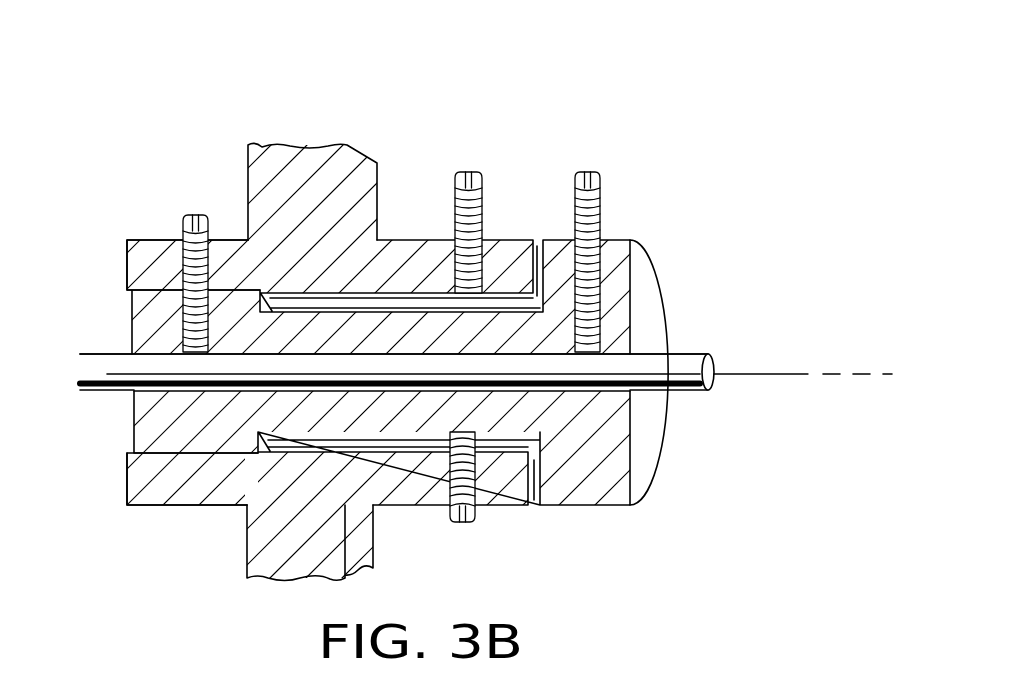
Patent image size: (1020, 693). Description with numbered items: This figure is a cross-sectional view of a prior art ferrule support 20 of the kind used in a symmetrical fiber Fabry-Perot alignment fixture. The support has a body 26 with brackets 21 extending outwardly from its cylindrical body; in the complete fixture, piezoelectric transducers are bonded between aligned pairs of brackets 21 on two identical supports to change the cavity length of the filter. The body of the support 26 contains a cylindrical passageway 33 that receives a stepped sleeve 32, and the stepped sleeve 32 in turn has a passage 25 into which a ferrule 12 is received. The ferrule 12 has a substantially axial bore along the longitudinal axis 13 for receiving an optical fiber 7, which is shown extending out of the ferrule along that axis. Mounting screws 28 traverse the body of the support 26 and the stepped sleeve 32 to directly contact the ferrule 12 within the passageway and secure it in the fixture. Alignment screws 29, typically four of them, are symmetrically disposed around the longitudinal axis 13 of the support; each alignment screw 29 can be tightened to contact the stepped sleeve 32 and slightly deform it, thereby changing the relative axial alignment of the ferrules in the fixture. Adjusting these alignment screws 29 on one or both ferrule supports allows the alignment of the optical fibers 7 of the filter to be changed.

The ferrule support 20 is at (552, 56).
The bracket 21 is at (300, 173).
The cylindrical passageway 33 is at (127, 292).
The body of the support 26 is at (156, 489).
The mounting screws 28 is at (186, 222).
The alignment screws 29 is at (484, 192).
The stepped sleeve 32 is at (652, 312).
The ferrule 12 is at (687, 357).
The passage 25 is at (134, 392).
The optical fiber 7 is at (770, 376).
The longitudinal axis 13 is at (852, 368).